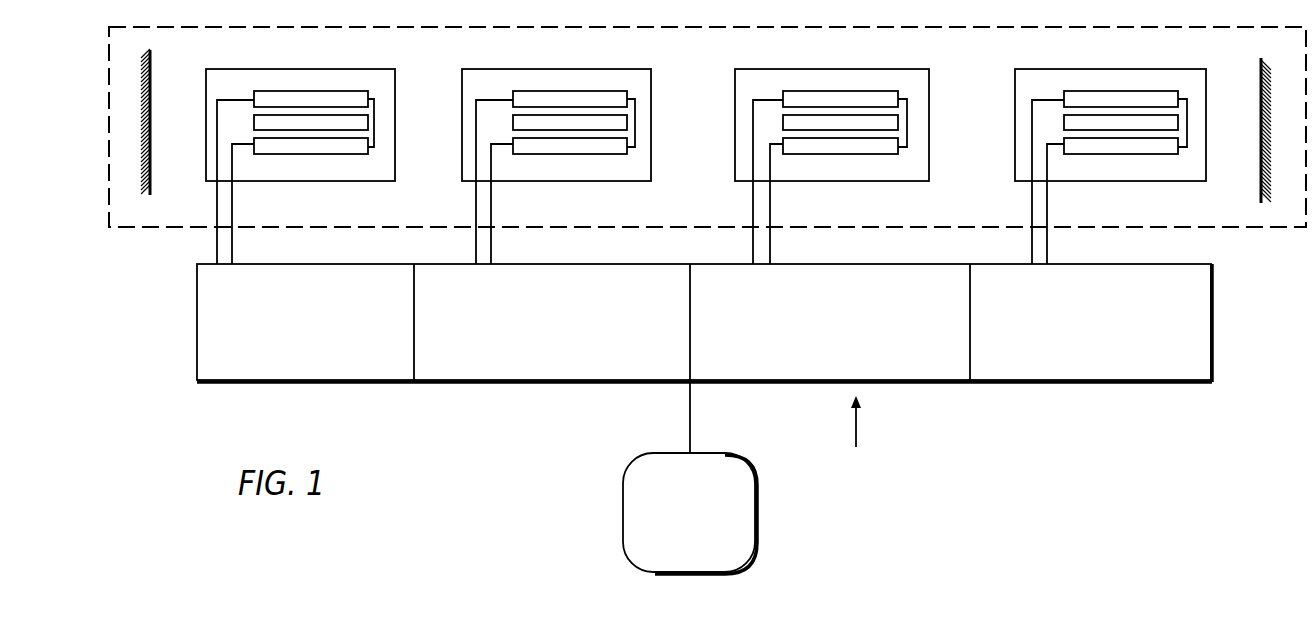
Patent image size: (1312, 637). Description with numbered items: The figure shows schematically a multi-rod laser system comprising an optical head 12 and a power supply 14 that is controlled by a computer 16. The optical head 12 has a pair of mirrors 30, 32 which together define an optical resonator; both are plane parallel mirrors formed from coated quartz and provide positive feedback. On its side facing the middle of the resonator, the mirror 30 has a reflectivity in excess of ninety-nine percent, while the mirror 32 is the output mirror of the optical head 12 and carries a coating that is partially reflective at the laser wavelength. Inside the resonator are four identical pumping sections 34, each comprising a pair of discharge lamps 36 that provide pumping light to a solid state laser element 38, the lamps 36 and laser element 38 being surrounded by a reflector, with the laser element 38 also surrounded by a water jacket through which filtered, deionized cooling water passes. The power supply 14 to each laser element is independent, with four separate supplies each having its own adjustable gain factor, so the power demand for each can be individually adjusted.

The optical head 12 is at (1182, 226).
The power supply 14 is at (1105, 385).
The computer 16 is at (745, 535).
The mirror 30 is at (150, 92).
The mirror 32 is at (1260, 72).
The pumping section 34 is at (706, 148).
The discharge lamp 36 is at (363, 100).
The laser element 38 is at (362, 118).